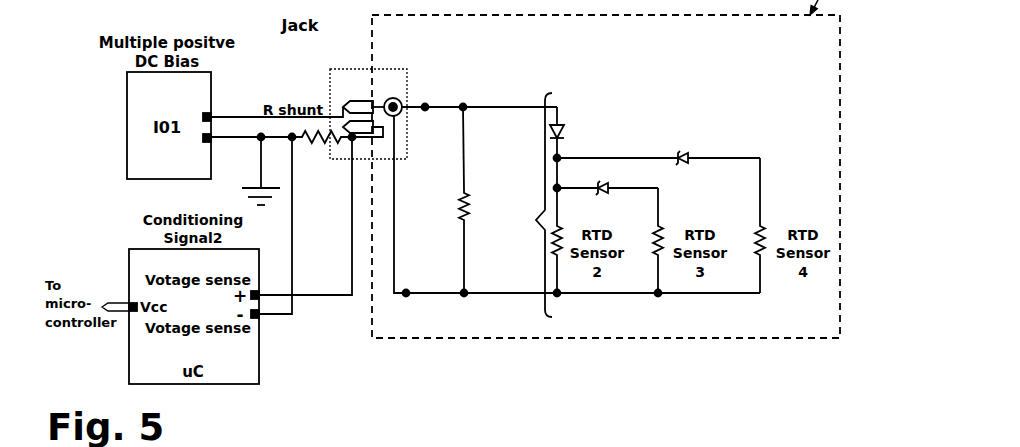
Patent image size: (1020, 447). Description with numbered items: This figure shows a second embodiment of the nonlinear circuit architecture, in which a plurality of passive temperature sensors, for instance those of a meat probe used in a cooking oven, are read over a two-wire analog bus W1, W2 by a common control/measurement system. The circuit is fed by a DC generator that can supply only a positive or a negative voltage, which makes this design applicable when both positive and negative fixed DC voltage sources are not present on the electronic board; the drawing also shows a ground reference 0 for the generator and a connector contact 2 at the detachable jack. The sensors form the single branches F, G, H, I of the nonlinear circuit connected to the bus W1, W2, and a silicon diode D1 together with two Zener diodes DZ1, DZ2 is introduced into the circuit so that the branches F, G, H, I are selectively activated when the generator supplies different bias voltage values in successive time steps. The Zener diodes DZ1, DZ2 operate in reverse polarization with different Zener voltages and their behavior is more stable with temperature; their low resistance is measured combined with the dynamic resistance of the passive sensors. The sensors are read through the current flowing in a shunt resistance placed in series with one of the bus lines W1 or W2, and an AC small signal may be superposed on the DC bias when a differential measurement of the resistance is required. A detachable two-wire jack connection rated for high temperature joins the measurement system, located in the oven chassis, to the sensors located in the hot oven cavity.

The two-wire bus line W1 is at (425, 105).
The two-wire bus line W2 is at (406, 296).
The circuit branch F is at (479, 133).
The circuit branch G is at (529, 228).
The circuit branch H is at (643, 177).
The circuit branch I is at (736, 151).
The silicon diode D1 is at (572, 132).
The Zener diode DZ1 is at (598, 179).
The Zener diode DZ2 is at (682, 149).
The ground 0 is at (262, 175).
The jack connector 2 is at (368, 114).